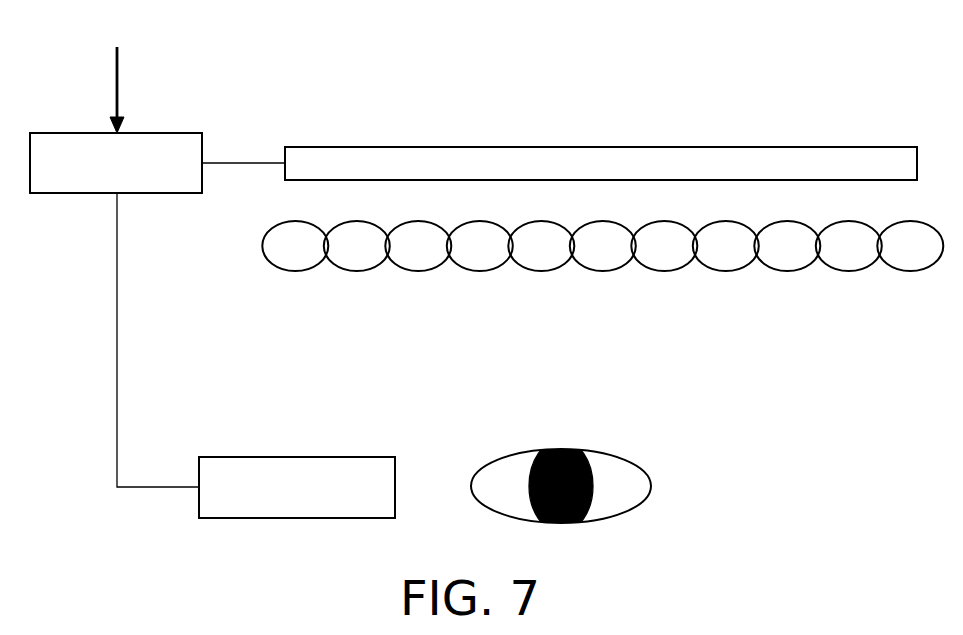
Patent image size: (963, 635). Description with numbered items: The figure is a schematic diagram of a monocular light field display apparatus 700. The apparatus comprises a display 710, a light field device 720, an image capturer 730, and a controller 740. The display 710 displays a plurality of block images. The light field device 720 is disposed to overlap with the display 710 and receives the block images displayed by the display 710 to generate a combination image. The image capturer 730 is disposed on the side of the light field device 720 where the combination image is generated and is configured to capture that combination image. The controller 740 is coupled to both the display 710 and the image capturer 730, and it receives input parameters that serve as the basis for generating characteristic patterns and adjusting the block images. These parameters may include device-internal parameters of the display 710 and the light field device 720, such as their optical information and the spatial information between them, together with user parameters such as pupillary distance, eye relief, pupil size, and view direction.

The light field display apparatus 700 is at (921, 527).
The display 710 is at (826, 147).
The light field device 720 is at (785, 272).
The image capturer 730 is at (314, 457).
The controller 740 is at (145, 133).